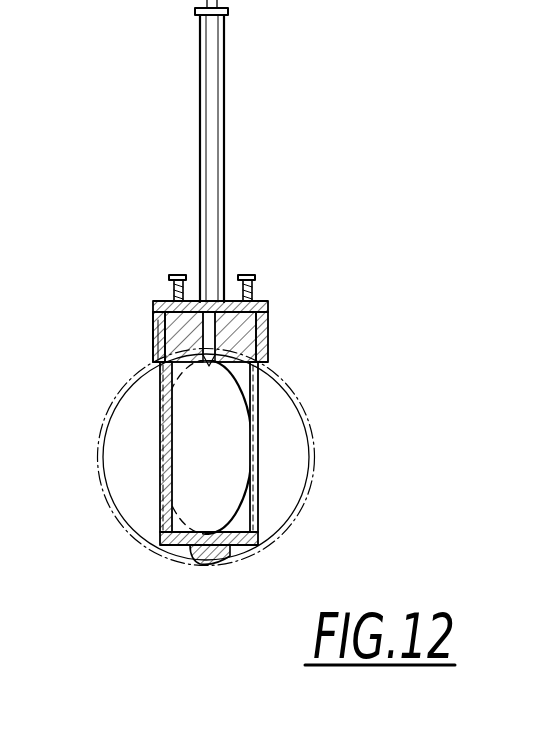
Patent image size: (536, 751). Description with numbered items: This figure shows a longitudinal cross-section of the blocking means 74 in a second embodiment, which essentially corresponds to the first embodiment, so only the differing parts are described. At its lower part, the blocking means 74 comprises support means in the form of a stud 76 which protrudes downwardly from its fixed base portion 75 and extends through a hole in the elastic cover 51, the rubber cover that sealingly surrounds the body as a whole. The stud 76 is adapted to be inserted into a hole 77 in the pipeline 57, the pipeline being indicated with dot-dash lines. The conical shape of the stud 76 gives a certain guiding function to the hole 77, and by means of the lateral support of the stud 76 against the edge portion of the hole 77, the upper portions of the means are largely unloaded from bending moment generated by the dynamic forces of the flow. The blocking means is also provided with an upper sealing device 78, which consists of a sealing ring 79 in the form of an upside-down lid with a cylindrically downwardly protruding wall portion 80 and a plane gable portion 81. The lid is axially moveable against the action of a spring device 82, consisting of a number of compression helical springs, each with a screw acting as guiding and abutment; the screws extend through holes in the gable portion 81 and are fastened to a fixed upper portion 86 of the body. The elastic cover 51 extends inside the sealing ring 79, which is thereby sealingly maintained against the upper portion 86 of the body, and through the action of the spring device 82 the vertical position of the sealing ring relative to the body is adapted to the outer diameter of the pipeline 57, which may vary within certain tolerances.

The elastic cover 51 is at (258, 381).
The pipeline 57 is at (296, 503).
The blocking means 74 is at (276, 326).
The fixed base portion 75 is at (172, 546).
The stud 76 is at (202, 567).
The hole 77 is at (216, 566).
The upper sealing device 78 is at (150, 318).
The sealing ring 79 is at (268, 305).
The wall portion 80 is at (155, 346).
The gable portion 81 is at (229, 298).
The spring device 82 is at (158, 282).
The upper portion 86 is at (258, 366).